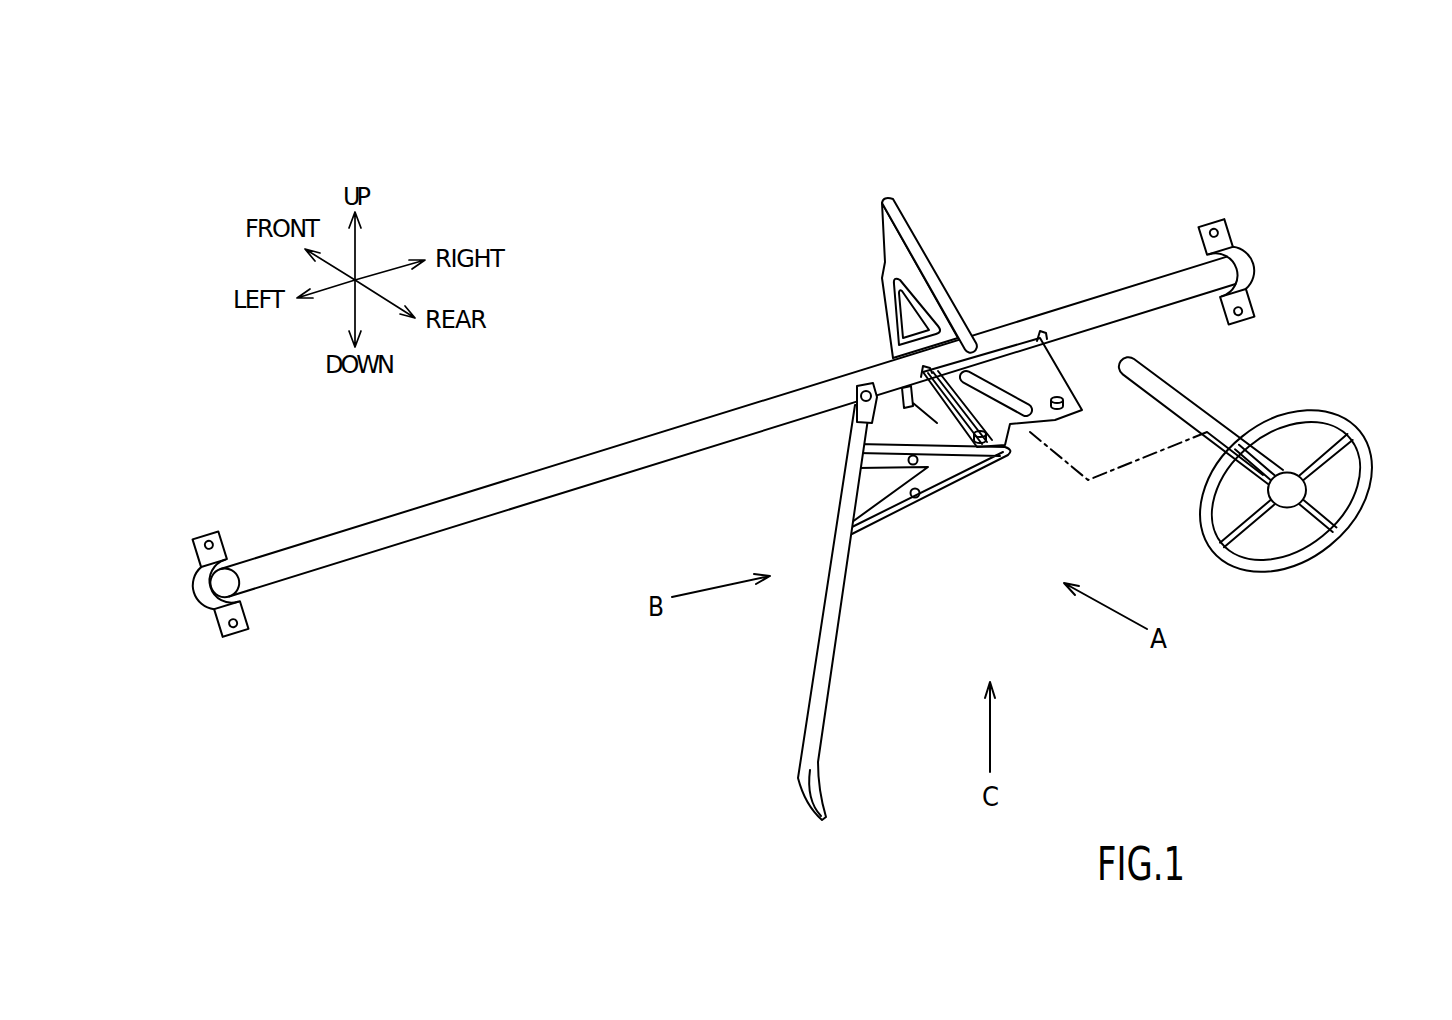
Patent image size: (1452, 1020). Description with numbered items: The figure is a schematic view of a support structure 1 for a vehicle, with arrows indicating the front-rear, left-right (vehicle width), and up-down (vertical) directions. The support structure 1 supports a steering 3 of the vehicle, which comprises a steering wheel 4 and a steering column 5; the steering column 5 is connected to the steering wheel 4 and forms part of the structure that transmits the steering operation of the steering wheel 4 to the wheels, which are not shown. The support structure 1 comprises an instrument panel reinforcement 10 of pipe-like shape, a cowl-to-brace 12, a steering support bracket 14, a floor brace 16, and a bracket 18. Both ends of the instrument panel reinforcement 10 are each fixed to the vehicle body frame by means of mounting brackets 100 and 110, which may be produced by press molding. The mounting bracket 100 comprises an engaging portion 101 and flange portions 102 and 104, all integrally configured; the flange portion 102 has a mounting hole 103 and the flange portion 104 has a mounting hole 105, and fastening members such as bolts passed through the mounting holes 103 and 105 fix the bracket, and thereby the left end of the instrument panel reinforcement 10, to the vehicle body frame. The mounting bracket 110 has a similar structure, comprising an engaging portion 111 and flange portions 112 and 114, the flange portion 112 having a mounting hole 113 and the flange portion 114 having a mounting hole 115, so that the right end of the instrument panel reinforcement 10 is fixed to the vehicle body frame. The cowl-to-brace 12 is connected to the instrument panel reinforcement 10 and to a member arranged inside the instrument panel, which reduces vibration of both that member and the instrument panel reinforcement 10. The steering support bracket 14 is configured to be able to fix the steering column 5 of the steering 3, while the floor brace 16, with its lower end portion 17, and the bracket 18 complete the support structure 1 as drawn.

The support structure 1 is at (722, 224).
The steering 3 is at (1376, 391).
The steering wheel 4 is at (1367, 450).
The steering column 5 is at (1177, 402).
The instrument panel reinforcement 10 is at (625, 457).
The cowl-to-brace 12 is at (943, 228).
The steering support bracket 14 is at (1092, 428).
The floor brace 16 is at (822, 667).
The foot hook 17 is at (802, 807).
The bracket 18 is at (931, 544).
The mounting bracket 100 is at (257, 592).
The engaging portion 101 is at (228, 585).
The flange portion 102 is at (195, 552).
The mounting hole 103 is at (207, 543).
The flange portion 104 is at (213, 615).
The mounting hole 105 is at (240, 633).
The mounting bracket 110 is at (1255, 282).
The engaging portion 111 is at (1237, 265).
The flange portion 112 is at (1232, 240).
The mounting hole 113 is at (1213, 225).
The flange portion 114 is at (1245, 290).
The mounting hole 115 is at (1240, 320).